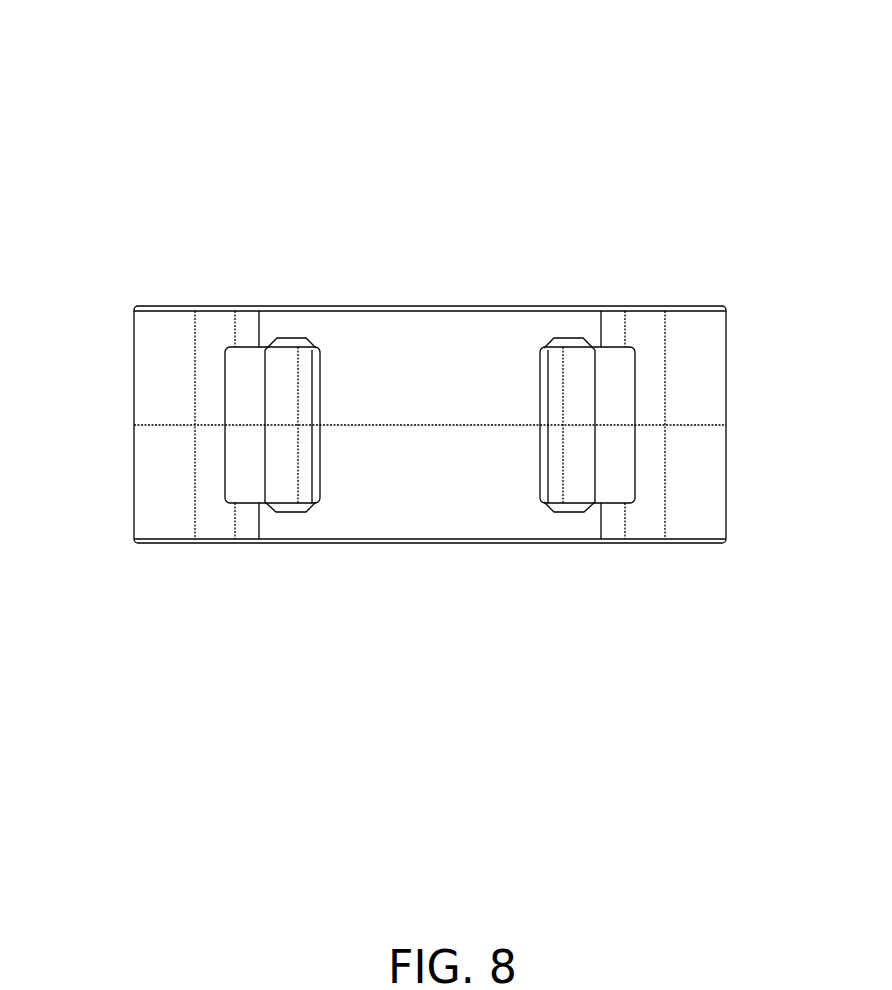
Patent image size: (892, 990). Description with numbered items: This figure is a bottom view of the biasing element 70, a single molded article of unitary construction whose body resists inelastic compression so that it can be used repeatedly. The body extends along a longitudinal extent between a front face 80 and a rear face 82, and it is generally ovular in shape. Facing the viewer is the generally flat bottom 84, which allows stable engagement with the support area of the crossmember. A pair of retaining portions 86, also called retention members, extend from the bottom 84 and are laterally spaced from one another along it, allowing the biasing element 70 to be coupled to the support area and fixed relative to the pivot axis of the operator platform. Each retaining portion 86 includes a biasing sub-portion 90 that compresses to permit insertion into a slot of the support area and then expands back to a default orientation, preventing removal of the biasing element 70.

The biasing element 70 is at (107, 282).
The front face 80 is at (445, 548).
The rear face 82 is at (533, 299).
The flat bottom 84 is at (365, 465).
The retaining portion 86 is at (250, 473).
The biasing sub-portion 90 is at (617, 387).